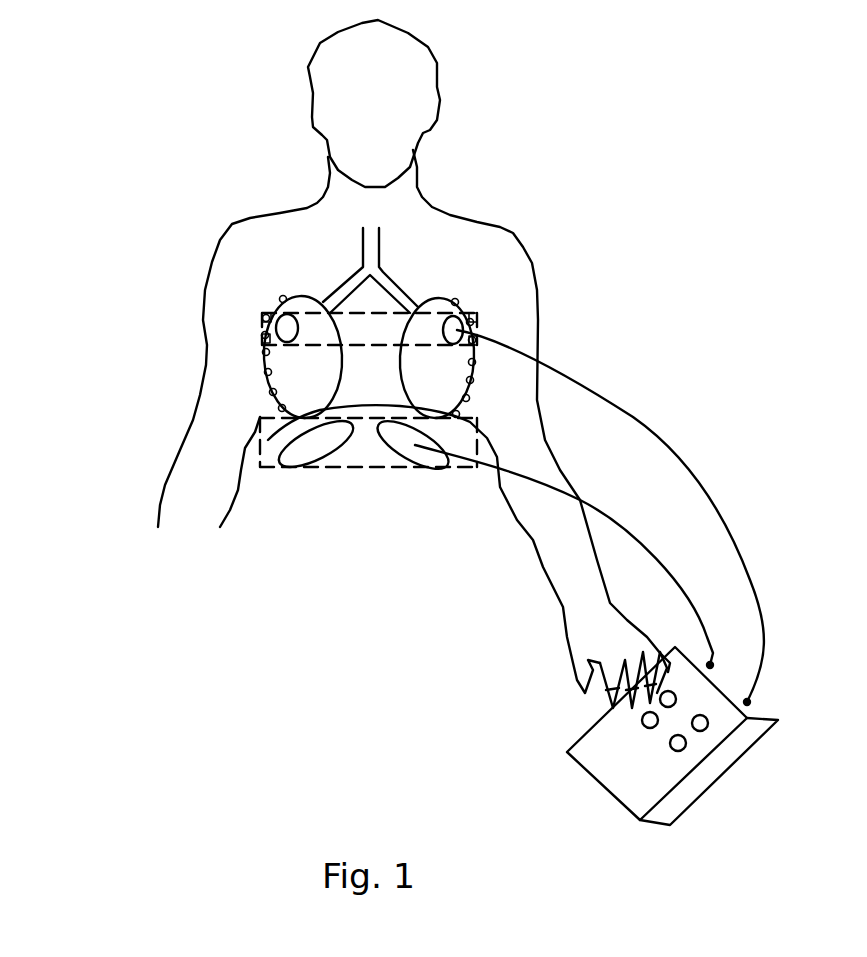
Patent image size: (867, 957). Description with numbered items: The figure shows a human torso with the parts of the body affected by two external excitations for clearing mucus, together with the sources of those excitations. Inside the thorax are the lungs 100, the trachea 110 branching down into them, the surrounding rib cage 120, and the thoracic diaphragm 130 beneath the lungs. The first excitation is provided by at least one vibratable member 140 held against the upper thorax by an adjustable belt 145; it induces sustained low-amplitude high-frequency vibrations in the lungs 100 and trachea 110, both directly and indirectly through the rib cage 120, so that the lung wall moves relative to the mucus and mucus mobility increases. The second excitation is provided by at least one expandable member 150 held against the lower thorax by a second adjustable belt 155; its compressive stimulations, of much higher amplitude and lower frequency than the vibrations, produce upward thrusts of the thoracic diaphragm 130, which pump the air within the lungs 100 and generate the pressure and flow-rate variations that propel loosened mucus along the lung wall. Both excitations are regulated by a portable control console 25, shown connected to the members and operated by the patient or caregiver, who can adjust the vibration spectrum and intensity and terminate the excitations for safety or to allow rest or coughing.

The portable control console 25 is at (620, 738).
The lungs 100 is at (297, 397).
The trachea 110 is at (383, 278).
The rib cage 120 is at (265, 372).
The thoracic diaphragm 130 is at (282, 433).
The vibratable member 140 is at (290, 333).
The adjustable belt 145 is at (305, 300).
The expandable member 150 is at (322, 443).
The adjustable belt 155 is at (367, 468).